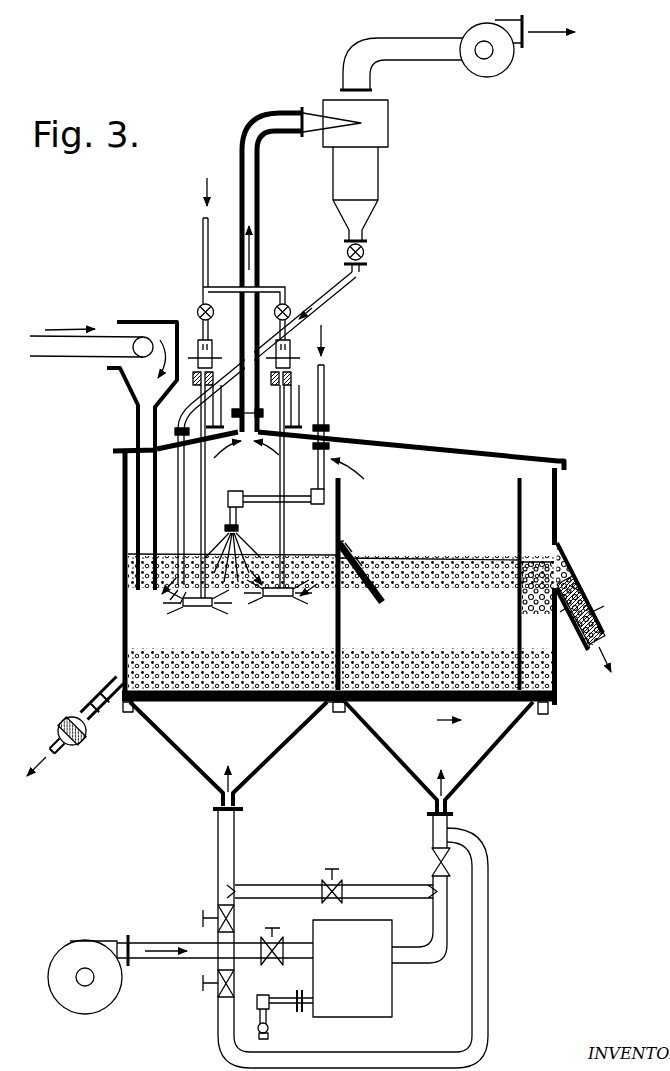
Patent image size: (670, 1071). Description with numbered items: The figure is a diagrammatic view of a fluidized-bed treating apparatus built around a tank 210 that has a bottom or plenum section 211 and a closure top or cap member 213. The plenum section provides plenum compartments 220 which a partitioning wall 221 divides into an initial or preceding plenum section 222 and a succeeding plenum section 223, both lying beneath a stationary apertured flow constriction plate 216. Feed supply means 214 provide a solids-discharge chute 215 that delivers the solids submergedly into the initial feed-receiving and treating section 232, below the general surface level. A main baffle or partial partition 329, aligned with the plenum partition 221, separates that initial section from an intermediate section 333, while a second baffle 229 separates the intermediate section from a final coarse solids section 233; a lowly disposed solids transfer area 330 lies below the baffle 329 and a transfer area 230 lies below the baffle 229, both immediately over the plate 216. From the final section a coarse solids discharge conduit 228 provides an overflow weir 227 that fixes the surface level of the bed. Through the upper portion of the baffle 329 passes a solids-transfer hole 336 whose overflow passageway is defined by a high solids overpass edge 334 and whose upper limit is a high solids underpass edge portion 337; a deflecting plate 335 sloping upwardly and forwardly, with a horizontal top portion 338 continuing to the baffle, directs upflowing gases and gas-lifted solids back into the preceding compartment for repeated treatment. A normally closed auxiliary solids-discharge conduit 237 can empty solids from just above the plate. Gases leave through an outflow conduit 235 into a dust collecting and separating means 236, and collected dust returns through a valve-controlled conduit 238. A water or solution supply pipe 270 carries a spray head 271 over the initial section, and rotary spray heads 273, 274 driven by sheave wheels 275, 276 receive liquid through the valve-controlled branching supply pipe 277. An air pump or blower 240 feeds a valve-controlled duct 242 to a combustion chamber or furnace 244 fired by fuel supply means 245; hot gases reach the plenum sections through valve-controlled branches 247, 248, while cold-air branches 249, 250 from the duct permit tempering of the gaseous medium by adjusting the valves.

The dust collecting and separating means 236 is at (392, 132).
The outflow conduit 235 is at (261, 233).
The valve-controlled branching supply pipe 277 is at (202, 253).
The pulley or sheave wheel 275 is at (196, 332).
The pulley or sheave wheel 276 is at (300, 362).
The gate or valve-controlled conduit 238 is at (343, 290).
The feed supply means 214 is at (218, 478).
The solids-discharge chute 215 is at (134, 500).
The closure top or cap member 213 is at (380, 442).
The tank 210 is at (294, 582).
The bottom or plenum section 211 is at (254, 782).
The apertured flow constriction plate 216 is at (380, 704).
The initial or preceding plenum section 222 is at (228, 755).
The second or succeeding plenum section 223 is at (439, 775).
The partitioning wall or dividing means 221 is at (335, 714).
The plenum compartments 220 is at (333, 752).
The main baffle or partial partition 329 is at (344, 520).
The second baffle or partitioning means 229 is at (517, 534).
The solids transfer area 330 is at (241, 670).
The transfer area 230 is at (447, 672).
The intermediate compartment or section 333 is at (429, 626).
The final coarse solids section 233 is at (538, 601).
The coarse solids overflow weir 227 is at (562, 577).
The coarse solids discharge conduit 228 is at (600, 619).
The high solids overpass edge 334 is at (341, 588).
The high solids underpass edge portion 337 is at (337, 540).
The horizontal top portion 338 is at (350, 545).
The solids-transfer hole or passage area 336 is at (336, 553).
The deflecting plate 335 is at (362, 557).
The water or solution supply pipe 270 is at (326, 398).
The spray head 271 is at (238, 527).
The initial feed-receiving and treating section 232 is at (199, 508).
The rotary spray head 274 is at (278, 598).
The rotary spray head 273 is at (190, 607).
The auxiliary solids-discharge conduit 237 is at (110, 688).
The air pump or blower 240 is at (63, 945).
The valve-controlled branch 250 is at (490, 982).
The valve-controlled branch 247 is at (352, 880).
The valve-controlled branch 248 is at (430, 880).
The combustion chamber or furnace 244 is at (352, 968).
The valve-controlled duct 242 is at (247, 942).
The valve-controlled branch 249 is at (220, 904).
The fuel supply means 245 is at (269, 1012).